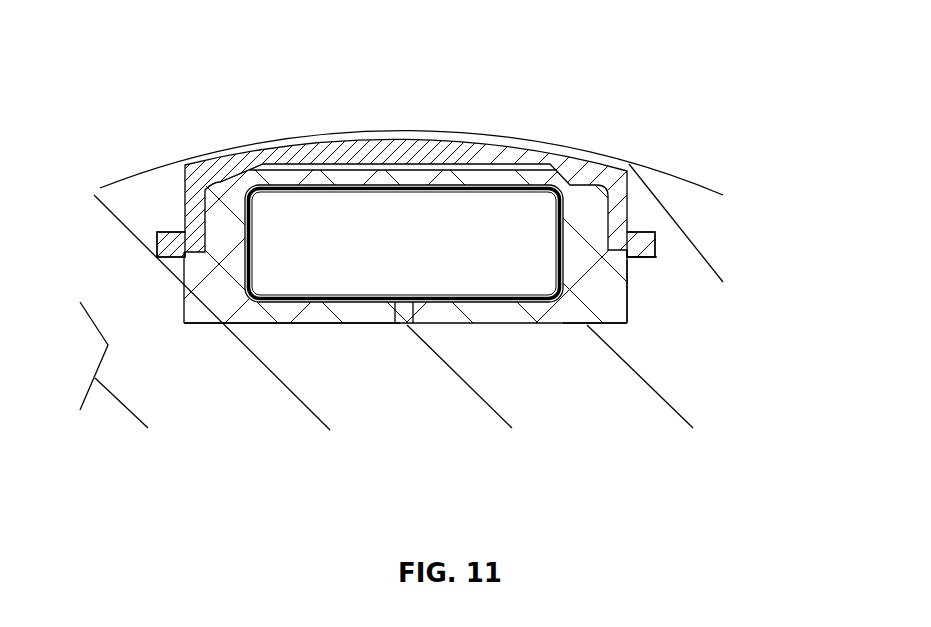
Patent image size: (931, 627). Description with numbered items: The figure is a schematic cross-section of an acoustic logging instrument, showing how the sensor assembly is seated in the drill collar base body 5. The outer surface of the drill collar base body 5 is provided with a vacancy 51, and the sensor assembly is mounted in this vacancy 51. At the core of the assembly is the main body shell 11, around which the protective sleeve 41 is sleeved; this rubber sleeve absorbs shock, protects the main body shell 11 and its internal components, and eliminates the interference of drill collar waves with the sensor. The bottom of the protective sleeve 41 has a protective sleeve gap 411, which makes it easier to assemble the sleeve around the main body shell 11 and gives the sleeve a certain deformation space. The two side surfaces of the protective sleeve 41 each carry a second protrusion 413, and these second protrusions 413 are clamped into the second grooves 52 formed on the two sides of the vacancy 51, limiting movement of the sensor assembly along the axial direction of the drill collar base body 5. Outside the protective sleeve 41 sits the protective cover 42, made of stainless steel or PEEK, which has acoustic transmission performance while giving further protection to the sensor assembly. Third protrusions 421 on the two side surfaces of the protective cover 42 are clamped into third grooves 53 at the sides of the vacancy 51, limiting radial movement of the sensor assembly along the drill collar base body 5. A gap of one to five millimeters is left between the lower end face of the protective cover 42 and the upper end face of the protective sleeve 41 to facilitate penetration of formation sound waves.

The drill collar base body 5 is at (143, 197).
The protective sleeve 41 is at (347, 180).
The protective sleeve gap 411 is at (403, 310).
The second protrusion 413 is at (620, 308).
The protective cover 42 is at (495, 150).
The third protrusion 421 is at (635, 242).
The vacancy 51 is at (185, 323).
The second groove 52 is at (628, 302).
The third groove 53 is at (655, 255).
The main body shell 11 is at (410, 188).